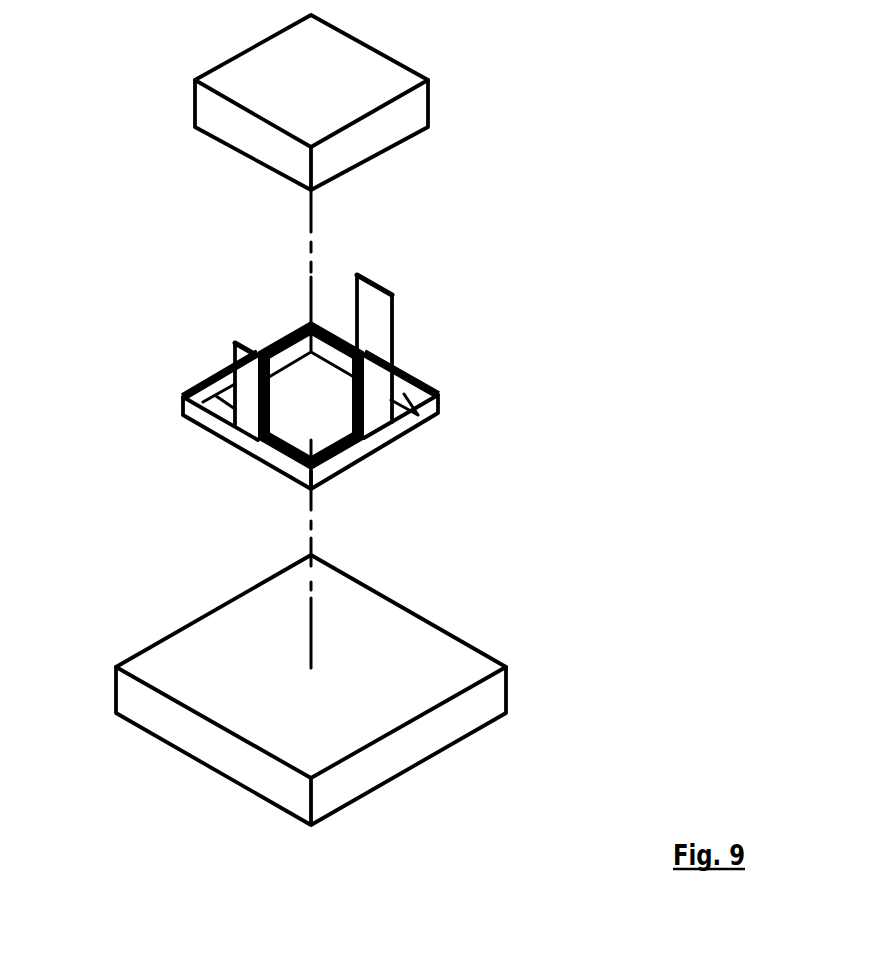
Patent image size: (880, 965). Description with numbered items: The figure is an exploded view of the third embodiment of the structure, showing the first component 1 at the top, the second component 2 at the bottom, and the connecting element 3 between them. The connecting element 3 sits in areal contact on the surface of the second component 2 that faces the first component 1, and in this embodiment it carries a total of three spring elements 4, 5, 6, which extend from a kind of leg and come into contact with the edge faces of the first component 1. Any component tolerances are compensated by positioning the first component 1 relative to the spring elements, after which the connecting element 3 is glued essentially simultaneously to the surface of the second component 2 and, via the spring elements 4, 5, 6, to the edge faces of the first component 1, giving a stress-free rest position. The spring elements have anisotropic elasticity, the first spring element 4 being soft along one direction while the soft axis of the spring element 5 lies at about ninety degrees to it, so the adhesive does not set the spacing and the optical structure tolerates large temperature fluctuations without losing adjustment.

The first component 1 is at (425, 97).
The second component 2 is at (478, 652).
The connecting element 3 is at (440, 413).
The first spring element 4 is at (382, 373).
The spring element 5 is at (258, 390).
The spring element 6 is at (378, 300).